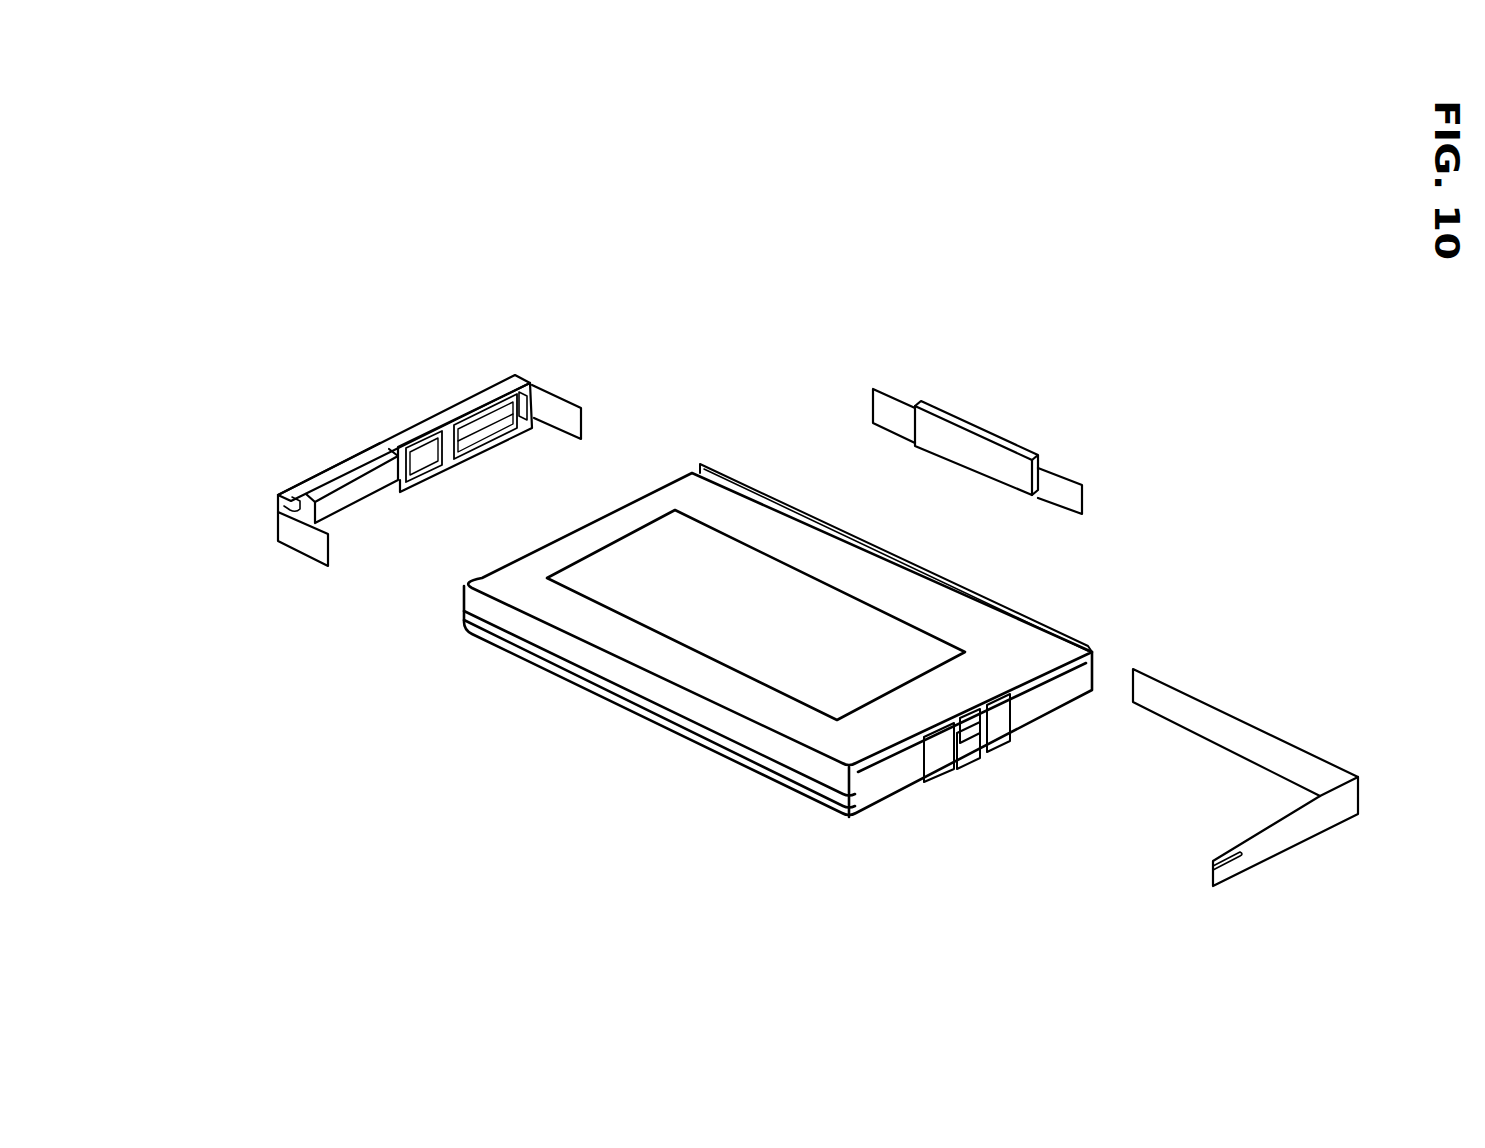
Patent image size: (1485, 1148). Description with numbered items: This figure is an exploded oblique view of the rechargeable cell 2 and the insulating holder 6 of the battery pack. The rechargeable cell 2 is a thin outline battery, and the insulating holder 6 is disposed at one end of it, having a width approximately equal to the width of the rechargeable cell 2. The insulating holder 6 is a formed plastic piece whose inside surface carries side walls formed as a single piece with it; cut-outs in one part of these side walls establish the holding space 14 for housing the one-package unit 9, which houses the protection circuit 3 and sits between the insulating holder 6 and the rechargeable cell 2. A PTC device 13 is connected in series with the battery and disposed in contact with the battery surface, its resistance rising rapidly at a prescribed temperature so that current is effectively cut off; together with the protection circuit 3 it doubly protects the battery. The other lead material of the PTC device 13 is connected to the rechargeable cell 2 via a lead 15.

The rechargeable cell 2 is at (768, 532).
The protection circuit 3 is at (429, 468).
The insulating holder 6 is at (503, 388).
The one-package unit 9 is at (374, 478).
The PTC device 13 is at (970, 436).
The holding space 14 is at (338, 458).
The lead 15 is at (1240, 737).